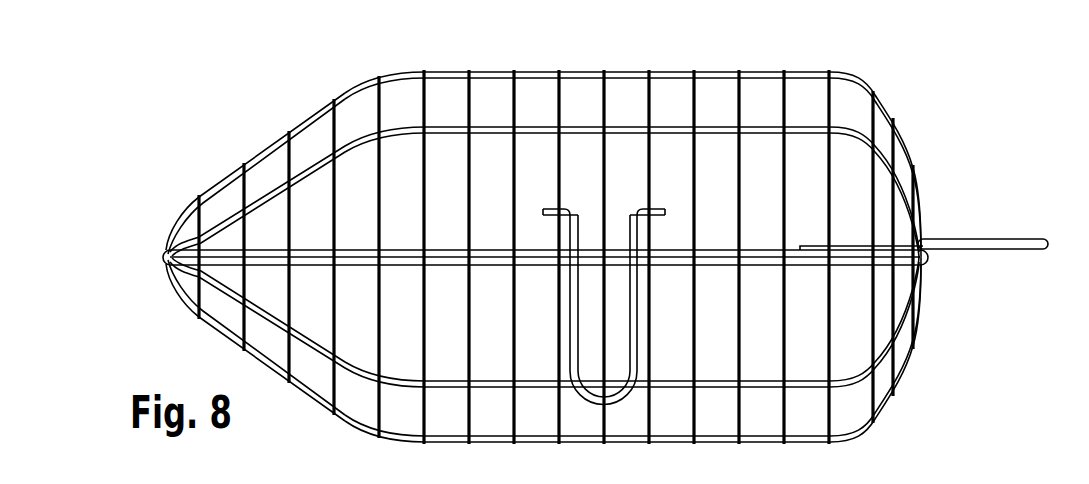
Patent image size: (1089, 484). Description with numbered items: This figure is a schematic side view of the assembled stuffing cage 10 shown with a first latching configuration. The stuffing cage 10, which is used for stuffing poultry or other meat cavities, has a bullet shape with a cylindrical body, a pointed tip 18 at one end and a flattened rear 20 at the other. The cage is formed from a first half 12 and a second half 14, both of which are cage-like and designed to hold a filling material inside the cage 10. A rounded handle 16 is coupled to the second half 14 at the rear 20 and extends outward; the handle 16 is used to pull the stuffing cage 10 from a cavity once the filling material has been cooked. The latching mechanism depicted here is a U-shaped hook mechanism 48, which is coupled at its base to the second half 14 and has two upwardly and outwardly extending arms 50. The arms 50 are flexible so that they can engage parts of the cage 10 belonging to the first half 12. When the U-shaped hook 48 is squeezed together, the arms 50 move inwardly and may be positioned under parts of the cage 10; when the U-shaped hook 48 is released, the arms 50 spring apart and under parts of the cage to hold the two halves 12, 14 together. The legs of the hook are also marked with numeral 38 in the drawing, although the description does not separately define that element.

The stuffing cage 10 is at (974, 118).
The first half 12 is at (712, 89).
The second half 14 is at (844, 416).
The handle 16 is at (983, 250).
The tip 18 is at (172, 283).
The rear 20 is at (902, 367).
The leg 38 is at (553, 366).
The U-shaped hook mechanism 48 is at (637, 343).
The arms 50 is at (550, 208).